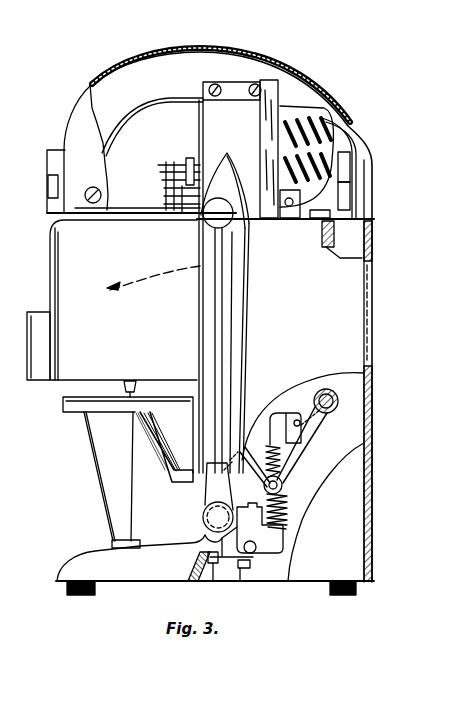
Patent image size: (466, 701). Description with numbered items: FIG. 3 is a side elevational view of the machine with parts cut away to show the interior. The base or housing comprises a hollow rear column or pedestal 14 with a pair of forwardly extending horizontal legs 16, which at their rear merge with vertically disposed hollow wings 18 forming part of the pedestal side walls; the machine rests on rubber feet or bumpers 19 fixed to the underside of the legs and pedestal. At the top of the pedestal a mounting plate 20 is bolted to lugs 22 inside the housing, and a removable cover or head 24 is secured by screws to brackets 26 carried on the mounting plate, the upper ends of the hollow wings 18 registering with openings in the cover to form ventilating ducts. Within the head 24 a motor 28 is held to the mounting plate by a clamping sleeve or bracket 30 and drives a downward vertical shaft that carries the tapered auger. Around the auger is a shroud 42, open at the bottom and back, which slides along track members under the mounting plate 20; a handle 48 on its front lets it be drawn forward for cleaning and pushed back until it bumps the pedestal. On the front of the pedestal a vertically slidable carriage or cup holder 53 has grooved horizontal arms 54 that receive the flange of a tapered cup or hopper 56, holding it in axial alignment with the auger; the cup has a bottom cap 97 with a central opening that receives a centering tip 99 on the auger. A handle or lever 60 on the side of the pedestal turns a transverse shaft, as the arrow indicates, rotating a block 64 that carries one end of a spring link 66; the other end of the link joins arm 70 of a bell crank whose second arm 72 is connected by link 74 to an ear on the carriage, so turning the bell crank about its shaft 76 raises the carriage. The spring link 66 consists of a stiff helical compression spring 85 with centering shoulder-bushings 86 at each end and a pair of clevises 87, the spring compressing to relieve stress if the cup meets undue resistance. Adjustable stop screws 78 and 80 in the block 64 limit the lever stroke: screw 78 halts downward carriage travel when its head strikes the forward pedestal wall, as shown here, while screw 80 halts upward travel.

The rear column or pedestal 14 is at (370, 298).
The horizontal legs 16 is at (82, 560).
The hollow wings 18 is at (237, 347).
The rubber feet or bumpers 19 is at (80, 596).
The mounting plate 20 is at (312, 228).
The lugs 22 is at (328, 249).
The removable cover or head 24 is at (176, 50).
The brackets 26 is at (289, 219).
The motor 28 is at (170, 98).
The clamping sleeve or bracket 30 is at (226, 86).
The shroud 42 is at (60, 286).
The handle 48 is at (30, 338).
The carriage or cup holder 53 is at (178, 475).
The horizontal arms 54 is at (105, 416).
The tapered cup or hopper 56 is at (112, 476).
The handle or lever 60 is at (215, 306).
The block 64 is at (236, 563).
The spring link 66 is at (290, 495).
The arm of the bell crank 70 is at (312, 404).
The second arm of the bell crank 72 is at (304, 440).
The link 74 is at (262, 450).
The bell crank shaft 76 is at (337, 412).
The stop screw 78 is at (190, 581).
The stop screw 80 is at (250, 580).
The helical compression spring 85 is at (292, 512).
The centering shoulder-bushings 86 is at (292, 526).
The clevises 87 is at (268, 404).
The cap 97 is at (118, 540).
The centering tip 99 is at (138, 390).